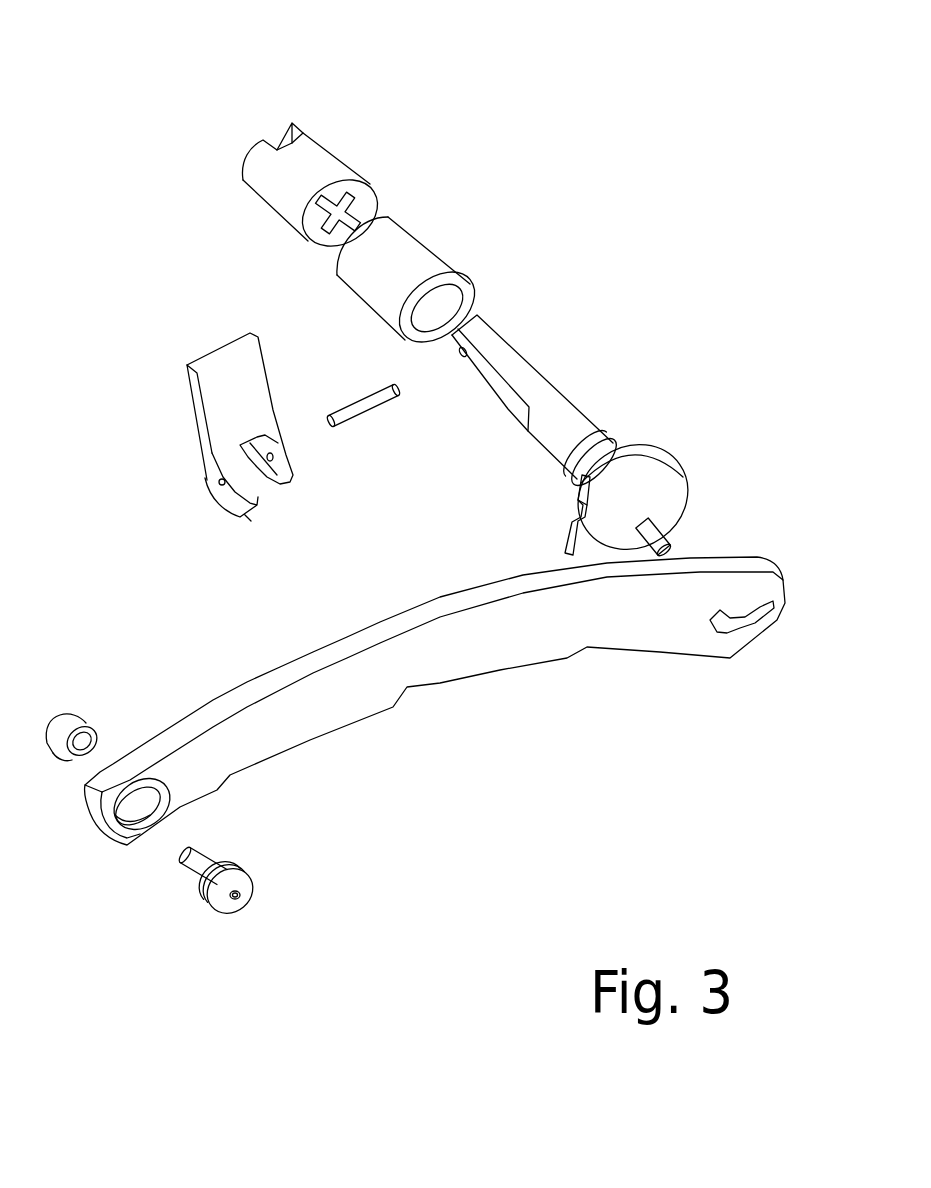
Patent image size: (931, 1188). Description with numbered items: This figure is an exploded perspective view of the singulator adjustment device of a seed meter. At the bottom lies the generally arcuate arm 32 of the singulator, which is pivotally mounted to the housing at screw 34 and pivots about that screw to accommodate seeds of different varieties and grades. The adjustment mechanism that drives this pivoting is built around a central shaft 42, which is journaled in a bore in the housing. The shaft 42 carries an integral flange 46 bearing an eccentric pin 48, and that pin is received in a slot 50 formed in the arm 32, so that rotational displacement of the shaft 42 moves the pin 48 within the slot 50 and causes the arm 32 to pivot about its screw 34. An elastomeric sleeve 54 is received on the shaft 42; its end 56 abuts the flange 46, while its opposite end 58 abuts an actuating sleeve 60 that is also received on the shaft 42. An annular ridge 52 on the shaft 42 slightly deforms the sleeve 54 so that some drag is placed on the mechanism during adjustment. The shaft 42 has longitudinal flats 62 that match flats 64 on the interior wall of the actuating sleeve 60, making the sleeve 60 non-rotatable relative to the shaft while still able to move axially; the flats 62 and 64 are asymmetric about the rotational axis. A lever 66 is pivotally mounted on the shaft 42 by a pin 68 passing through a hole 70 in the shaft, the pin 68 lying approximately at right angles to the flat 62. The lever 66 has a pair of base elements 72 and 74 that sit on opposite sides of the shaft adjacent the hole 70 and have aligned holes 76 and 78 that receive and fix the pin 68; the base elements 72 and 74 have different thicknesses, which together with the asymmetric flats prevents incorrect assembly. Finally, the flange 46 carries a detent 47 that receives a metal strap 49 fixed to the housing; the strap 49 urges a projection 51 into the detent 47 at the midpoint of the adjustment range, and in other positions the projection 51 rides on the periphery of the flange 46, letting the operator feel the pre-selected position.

The arm 32 is at (530, 633).
The screw 34 is at (197, 866).
The central shaft 42 is at (557, 393).
The integral flange 46 is at (653, 445).
The detent 47 is at (572, 552).
The eccentric pin 48 is at (663, 528).
The metal strap 49 is at (577, 503).
The slot 50 is at (768, 623).
The projection 51 is at (587, 513).
The annular ridge 52 is at (607, 443).
The sleeve 54 is at (453, 255).
The end 56 is at (470, 287).
The opposite end 58 is at (395, 217).
The actuating sleeve 60 is at (338, 152).
The flats 62 is at (512, 347).
The flats 64 is at (277, 148).
The lever 66 is at (194, 418).
The pin 68 is at (368, 410).
The hole 70 is at (462, 357).
The base element 72 is at (247, 513).
The base element 74 is at (293, 482).
The hole 76 is at (222, 490).
The hole 78 is at (282, 433).